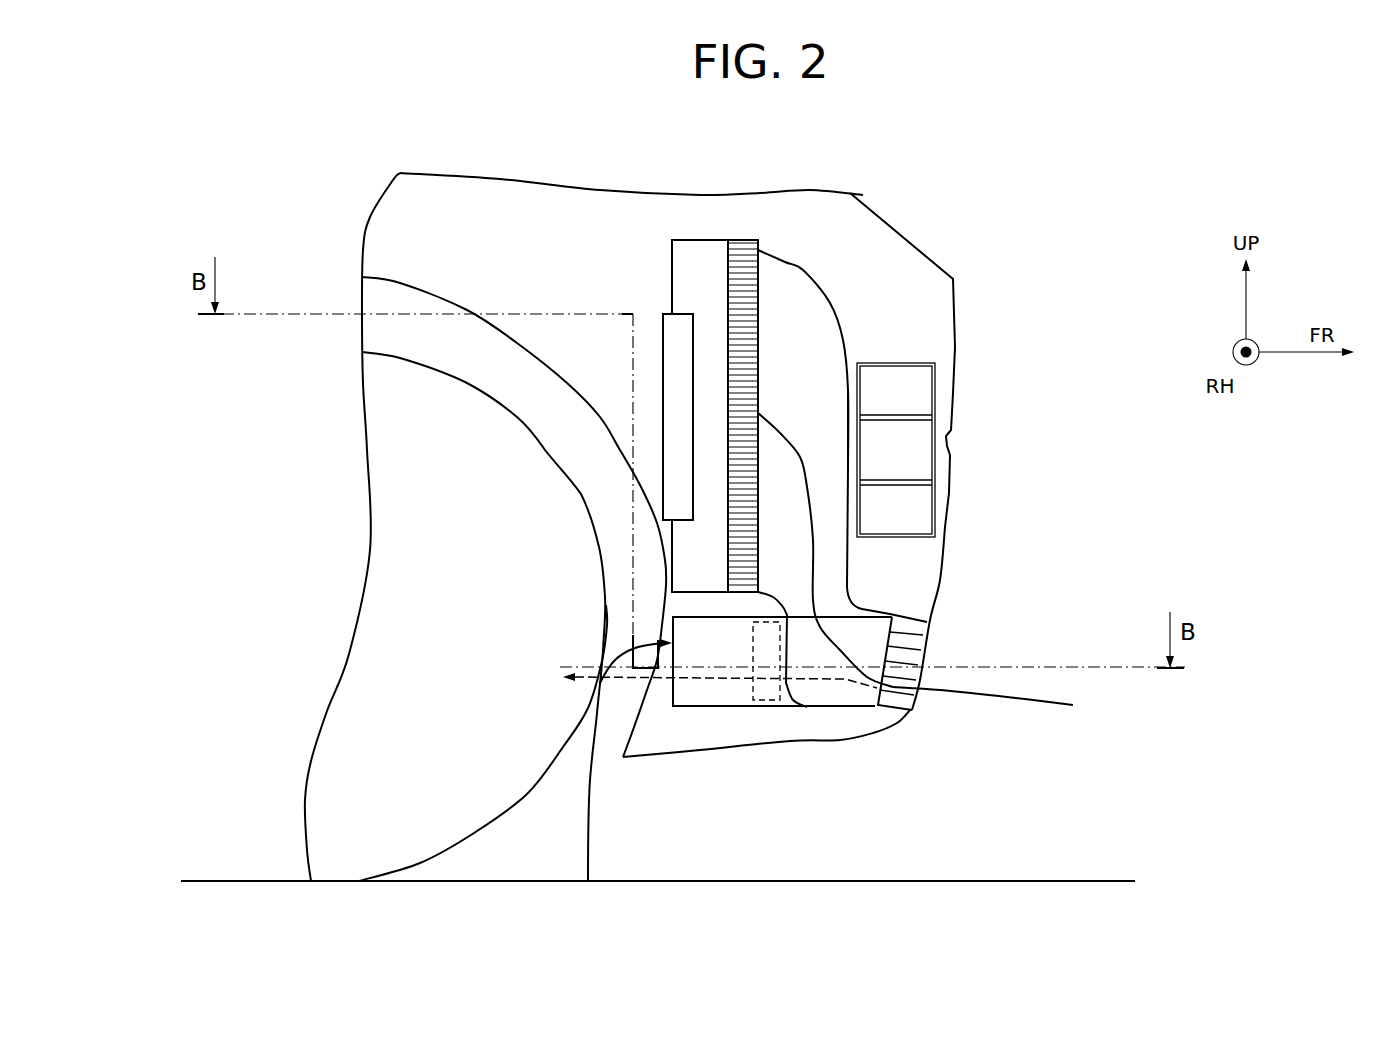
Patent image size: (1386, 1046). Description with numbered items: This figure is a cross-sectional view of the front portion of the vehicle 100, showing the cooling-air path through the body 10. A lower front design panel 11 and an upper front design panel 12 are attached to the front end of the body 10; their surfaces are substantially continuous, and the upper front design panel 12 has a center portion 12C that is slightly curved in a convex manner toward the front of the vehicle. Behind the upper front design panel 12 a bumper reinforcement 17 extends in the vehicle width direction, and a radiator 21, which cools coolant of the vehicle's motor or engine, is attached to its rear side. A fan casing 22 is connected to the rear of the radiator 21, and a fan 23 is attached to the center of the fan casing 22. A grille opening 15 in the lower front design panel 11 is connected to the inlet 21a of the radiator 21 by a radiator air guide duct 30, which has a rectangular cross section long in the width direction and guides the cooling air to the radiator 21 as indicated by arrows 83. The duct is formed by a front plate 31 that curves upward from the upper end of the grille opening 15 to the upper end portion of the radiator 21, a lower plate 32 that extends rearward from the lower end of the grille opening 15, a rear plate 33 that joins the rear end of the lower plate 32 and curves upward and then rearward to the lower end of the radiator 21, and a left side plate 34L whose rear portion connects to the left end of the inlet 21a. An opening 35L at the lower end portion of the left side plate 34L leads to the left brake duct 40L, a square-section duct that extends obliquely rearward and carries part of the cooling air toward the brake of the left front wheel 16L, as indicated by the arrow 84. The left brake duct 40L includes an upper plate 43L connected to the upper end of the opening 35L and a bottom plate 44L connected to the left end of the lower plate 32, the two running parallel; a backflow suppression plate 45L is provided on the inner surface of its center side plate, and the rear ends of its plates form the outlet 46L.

The vehicle 100 is at (1082, 253).
The body 10 is at (965, 487).
The lower front design panel 11 is at (948, 521).
The upper front design panel 12 is at (969, 319).
The center portion 12C is at (957, 360).
The grille opening 15 is at (934, 651).
The left front wheel 16L is at (425, 867).
The bumper reinforcement 17 is at (933, 417).
The radiator 21 is at (742, 238).
The inlet 21a is at (782, 293).
The fan casing 22 is at (690, 238).
The fan 23 is at (660, 367).
The radiator air guide duct 30 is at (805, 258).
The front plate 31 is at (800, 383).
The lower plate 32 is at (845, 713).
The rear plate 33 is at (880, 723).
The left side plate 34L is at (844, 330).
The opening 35L is at (845, 642).
The left brake duct 40L is at (778, 718).
The upper plate 43L is at (693, 613).
The bottom plate 44L is at (698, 707).
The backflow suppression plate 45L is at (753, 647).
The outlet 46L is at (588, 881).
The arrows 83 is at (800, 447).
The arrow 84 is at (730, 707).